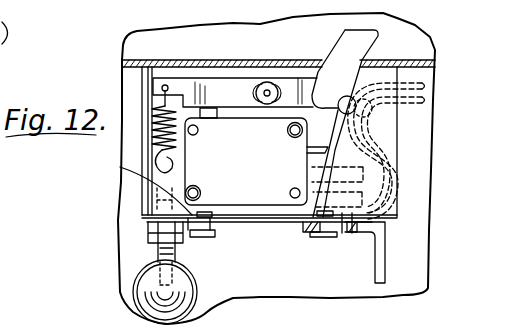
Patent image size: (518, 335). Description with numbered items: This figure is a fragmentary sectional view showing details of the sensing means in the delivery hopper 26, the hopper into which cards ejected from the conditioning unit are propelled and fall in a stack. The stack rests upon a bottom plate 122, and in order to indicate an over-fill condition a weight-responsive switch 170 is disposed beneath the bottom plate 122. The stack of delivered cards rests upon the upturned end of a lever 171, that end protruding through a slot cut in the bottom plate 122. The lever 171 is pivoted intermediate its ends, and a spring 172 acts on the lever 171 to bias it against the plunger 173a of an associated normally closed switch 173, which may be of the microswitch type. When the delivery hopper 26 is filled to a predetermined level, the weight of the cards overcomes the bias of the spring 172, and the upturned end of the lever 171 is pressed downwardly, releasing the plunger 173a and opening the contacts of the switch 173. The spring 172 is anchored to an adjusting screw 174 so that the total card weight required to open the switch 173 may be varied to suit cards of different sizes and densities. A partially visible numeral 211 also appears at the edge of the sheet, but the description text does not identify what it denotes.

The delivery hopper 26 is at (143, 47).
The bottom plate 122 is at (211, 62).
The lever 171 is at (228, 87).
The spring 172 is at (157, 147).
The plunger 173a is at (216, 118).
The weight-responsive switch 170 is at (283, 168).
The switch 173 is at (263, 196).
The adjusting screw 174 is at (182, 273).
The reference numeral (partial) 211 is at (335, 332).